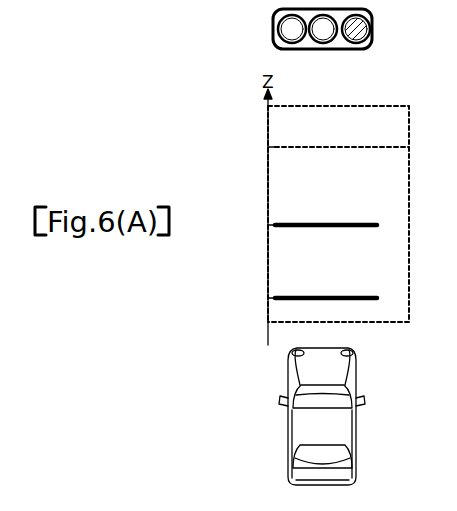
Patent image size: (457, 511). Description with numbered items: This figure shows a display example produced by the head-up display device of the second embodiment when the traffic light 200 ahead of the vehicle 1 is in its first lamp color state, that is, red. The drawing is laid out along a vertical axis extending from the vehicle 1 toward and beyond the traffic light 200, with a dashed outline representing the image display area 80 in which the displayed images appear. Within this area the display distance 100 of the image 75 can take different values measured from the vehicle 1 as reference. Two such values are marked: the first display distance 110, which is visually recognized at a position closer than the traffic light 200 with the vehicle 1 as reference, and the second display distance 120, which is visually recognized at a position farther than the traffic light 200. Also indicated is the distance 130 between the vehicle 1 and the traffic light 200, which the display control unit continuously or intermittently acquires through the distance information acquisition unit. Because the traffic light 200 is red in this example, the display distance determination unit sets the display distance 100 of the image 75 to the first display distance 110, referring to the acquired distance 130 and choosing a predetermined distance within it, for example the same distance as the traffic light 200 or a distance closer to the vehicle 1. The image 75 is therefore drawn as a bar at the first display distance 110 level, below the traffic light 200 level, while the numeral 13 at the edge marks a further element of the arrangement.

The vehicle 1 is at (352, 392).
The camera 13 is at (447, 230).
The image 75 is at (365, 296).
The image display area 80 is at (409, 322).
The display distance 100 is at (309, 239).
The first display distance 110 is at (252, 293).
The second display distance 120 is at (253, 136).
The distance 130 is at (252, 229).
The traffic light 200 is at (345, 49).